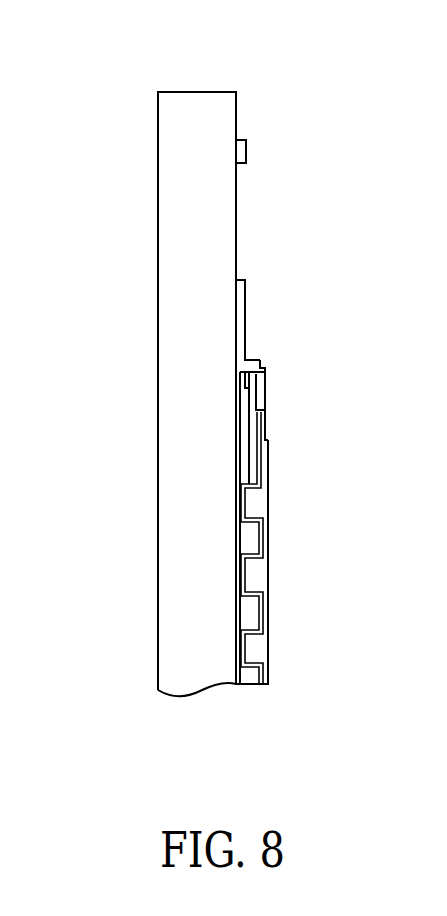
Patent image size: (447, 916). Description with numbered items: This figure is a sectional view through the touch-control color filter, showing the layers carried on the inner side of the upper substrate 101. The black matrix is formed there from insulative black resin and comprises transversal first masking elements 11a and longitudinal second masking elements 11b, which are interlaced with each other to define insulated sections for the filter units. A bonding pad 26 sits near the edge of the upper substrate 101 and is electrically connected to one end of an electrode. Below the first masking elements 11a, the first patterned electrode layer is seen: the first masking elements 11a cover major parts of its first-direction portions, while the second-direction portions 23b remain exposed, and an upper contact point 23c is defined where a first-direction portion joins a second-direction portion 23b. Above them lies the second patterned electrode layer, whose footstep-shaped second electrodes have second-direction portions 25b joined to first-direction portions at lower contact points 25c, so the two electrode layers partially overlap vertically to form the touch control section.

The upper substrate 101 is at (158, 195).
The bonding pad 26 is at (247, 150).
The second-direction portion 25b is at (246, 288).
The first masking element 11a is at (252, 377).
The lower contact point 25c is at (252, 398).
The upper contact point 23c is at (243, 381).
The second-direction portion 23b is at (240, 428).
The second masking element 11b is at (270, 481).